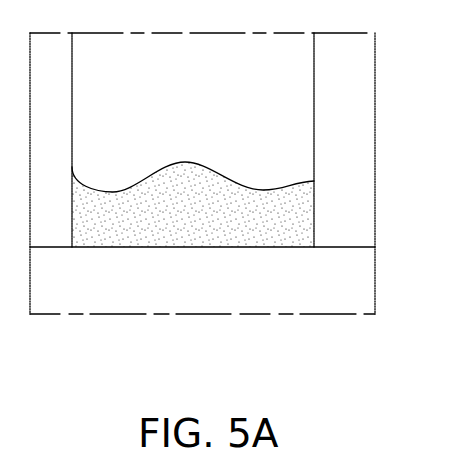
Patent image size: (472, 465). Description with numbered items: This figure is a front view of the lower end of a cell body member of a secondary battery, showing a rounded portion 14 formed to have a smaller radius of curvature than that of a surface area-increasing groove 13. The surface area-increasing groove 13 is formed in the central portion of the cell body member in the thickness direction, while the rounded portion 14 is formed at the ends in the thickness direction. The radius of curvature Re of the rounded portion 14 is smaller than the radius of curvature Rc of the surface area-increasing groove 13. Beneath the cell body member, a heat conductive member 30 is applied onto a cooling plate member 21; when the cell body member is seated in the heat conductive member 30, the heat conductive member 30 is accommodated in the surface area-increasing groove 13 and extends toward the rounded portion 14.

The surface area-increasing groove 13 is at (314, 181).
The rounded portion 14 is at (193, 163).
The cooling plate member 21 is at (315, 287).
The heat conductive member 30 is at (295, 222).
The radius of curvature of the surface area-increasing groove Rc is at (230, 180).
The radius of curvature of the rounded portion Re is at (282, 172).